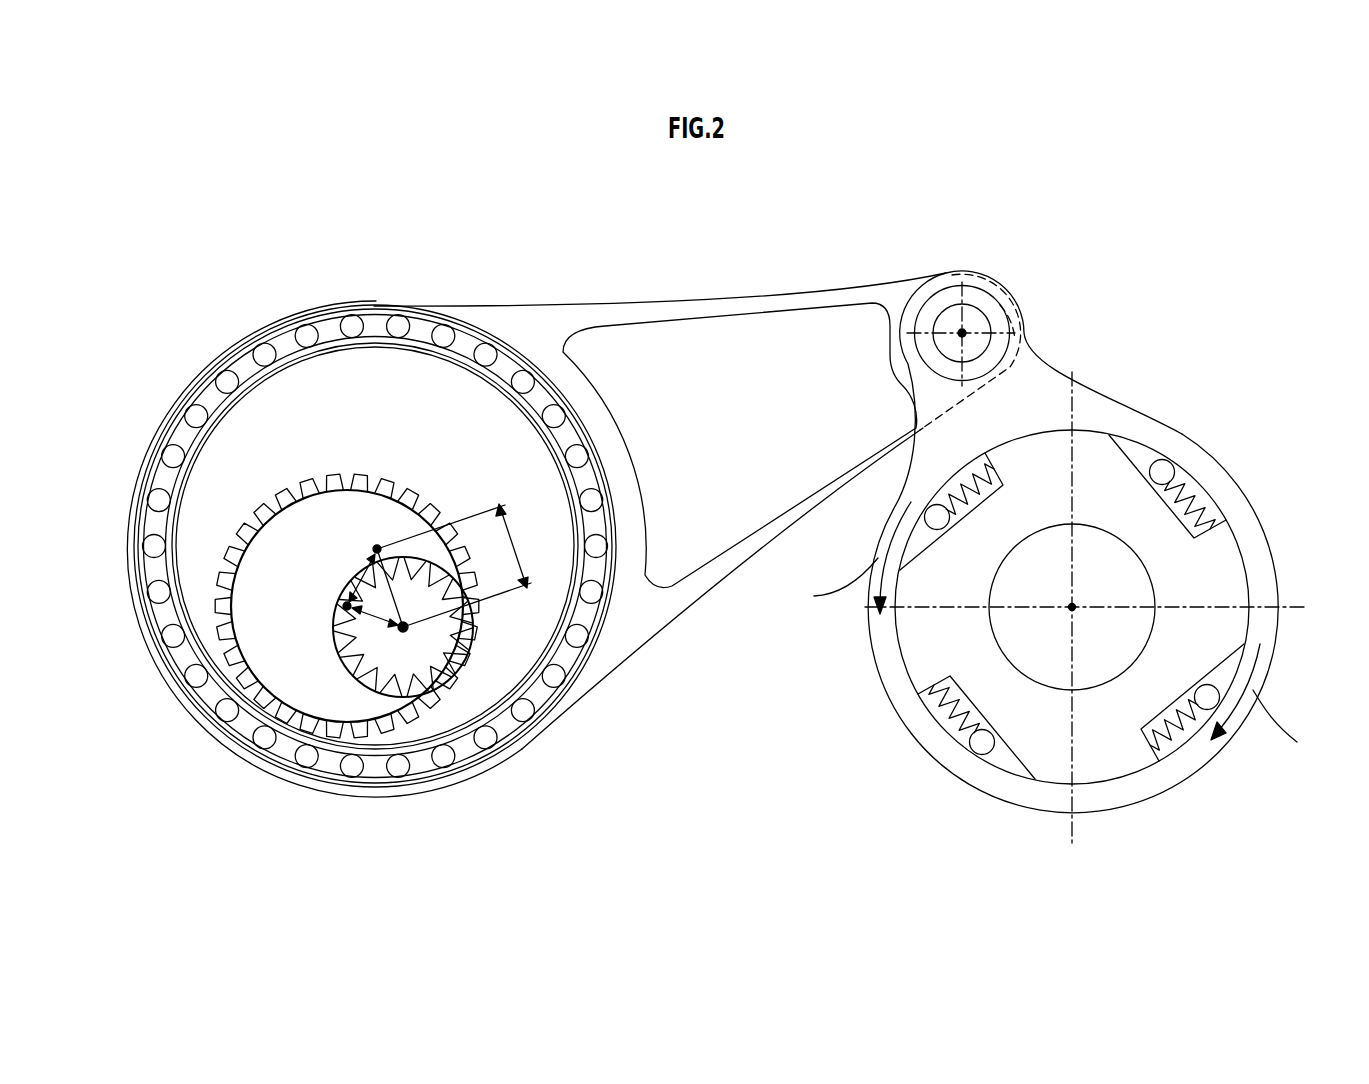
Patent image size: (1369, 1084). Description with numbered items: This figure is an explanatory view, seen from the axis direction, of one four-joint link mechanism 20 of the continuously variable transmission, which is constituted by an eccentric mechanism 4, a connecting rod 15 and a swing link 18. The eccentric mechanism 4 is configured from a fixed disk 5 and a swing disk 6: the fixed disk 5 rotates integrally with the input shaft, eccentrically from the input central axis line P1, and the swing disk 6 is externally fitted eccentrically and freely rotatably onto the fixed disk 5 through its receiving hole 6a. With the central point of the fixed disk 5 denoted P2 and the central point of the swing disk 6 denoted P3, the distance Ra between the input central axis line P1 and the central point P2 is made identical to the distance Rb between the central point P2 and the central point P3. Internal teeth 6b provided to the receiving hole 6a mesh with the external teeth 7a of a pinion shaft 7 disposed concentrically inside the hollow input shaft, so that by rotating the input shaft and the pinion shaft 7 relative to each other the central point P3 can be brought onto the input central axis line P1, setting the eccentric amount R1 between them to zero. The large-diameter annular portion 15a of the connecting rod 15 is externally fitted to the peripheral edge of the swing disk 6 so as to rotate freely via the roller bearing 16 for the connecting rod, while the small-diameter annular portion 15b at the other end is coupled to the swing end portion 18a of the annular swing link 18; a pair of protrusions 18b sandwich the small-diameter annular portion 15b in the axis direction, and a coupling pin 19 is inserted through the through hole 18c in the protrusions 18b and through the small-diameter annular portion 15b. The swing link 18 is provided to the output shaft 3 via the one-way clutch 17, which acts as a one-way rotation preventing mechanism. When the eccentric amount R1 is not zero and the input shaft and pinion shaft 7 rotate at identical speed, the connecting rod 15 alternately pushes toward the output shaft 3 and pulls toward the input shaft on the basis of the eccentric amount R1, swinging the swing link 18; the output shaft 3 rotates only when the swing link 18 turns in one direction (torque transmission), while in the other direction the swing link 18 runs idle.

The four-joint link mechanism 20 is at (210, 185).
The connecting rod 15 is at (650, 300).
The large-diameter annular portion 15a is at (228, 347).
The small-diameter annular portion 15b is at (880, 292).
The roller bearing for connecting rod 16 is at (452, 335).
The eccentric mechanism 4 is at (537, 620).
The fixed disk 5 is at (288, 670).
The swing disk 6 is at (200, 543).
The receiving hole 6a is at (233, 607).
The internal teeth 6b is at (272, 502).
The pinion shaft 7 is at (465, 645).
The external teeth 7a is at (343, 663).
The input central axis line P1 is at (405, 630).
The central point of the fixed disk P2 is at (347, 606).
The central point of the swing disk P3 is at (377, 549).
The distance between input central axis line and central point P2 Ra is at (375, 627).
The distance between central point P2 and central point P3 Rb is at (352, 578).
The eccentric amount R1 is at (460, 565).
The swing link 18 is at (1080, 344).
The swing end portion 18a is at (988, 255).
The protrusions 18b is at (922, 304).
The through hole 18c is at (995, 316).
The coupling pin 19 is at (948, 295).
The one-way clutch 17 is at (1174, 467).
The output shaft 3 is at (1072, 607).